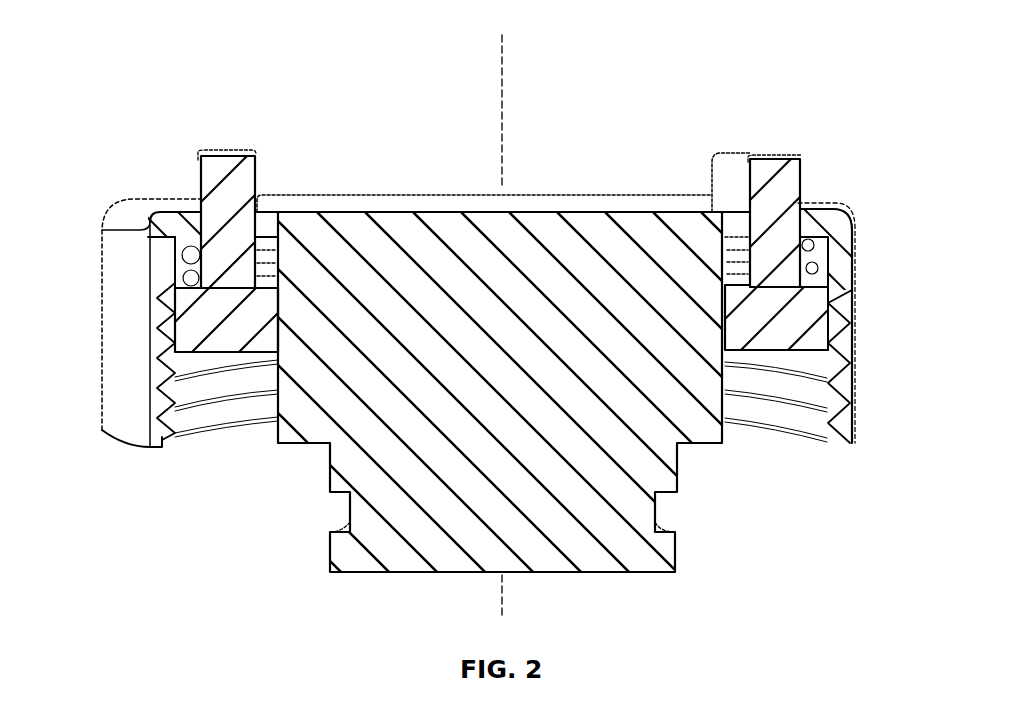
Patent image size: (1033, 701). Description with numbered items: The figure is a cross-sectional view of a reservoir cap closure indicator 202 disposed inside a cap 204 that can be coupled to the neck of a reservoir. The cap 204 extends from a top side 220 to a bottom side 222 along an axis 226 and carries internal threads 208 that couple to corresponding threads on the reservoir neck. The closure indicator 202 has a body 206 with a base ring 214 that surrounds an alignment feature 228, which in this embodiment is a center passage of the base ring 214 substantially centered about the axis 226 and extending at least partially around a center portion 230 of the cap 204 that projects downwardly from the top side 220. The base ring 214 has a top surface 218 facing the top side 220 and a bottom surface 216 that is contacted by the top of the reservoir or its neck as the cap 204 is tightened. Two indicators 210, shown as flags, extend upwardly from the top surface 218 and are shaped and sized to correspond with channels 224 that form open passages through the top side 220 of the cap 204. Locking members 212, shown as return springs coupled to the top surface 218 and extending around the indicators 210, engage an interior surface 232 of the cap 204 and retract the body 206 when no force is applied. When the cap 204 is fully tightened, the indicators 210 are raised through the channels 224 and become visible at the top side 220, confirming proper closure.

The reservoir cap closure indicator 202 is at (812, 133).
The cap 204 is at (852, 247).
The body 206 is at (187, 335).
The internal threads 208 is at (155, 398).
The indicators 210 is at (201, 172).
The locking members 212 is at (188, 257).
The base ring 214 is at (783, 308).
The bottom surface 216 is at (826, 346).
The top surface 218 is at (822, 303).
The top side 220 is at (567, 194).
The bottom side 222 is at (843, 443).
The channels 224 is at (258, 203).
The axis 226 is at (504, 60).
The alignment feature 228 is at (267, 298).
The center portion 230 is at (276, 436).
The interior surface 232 is at (187, 237).